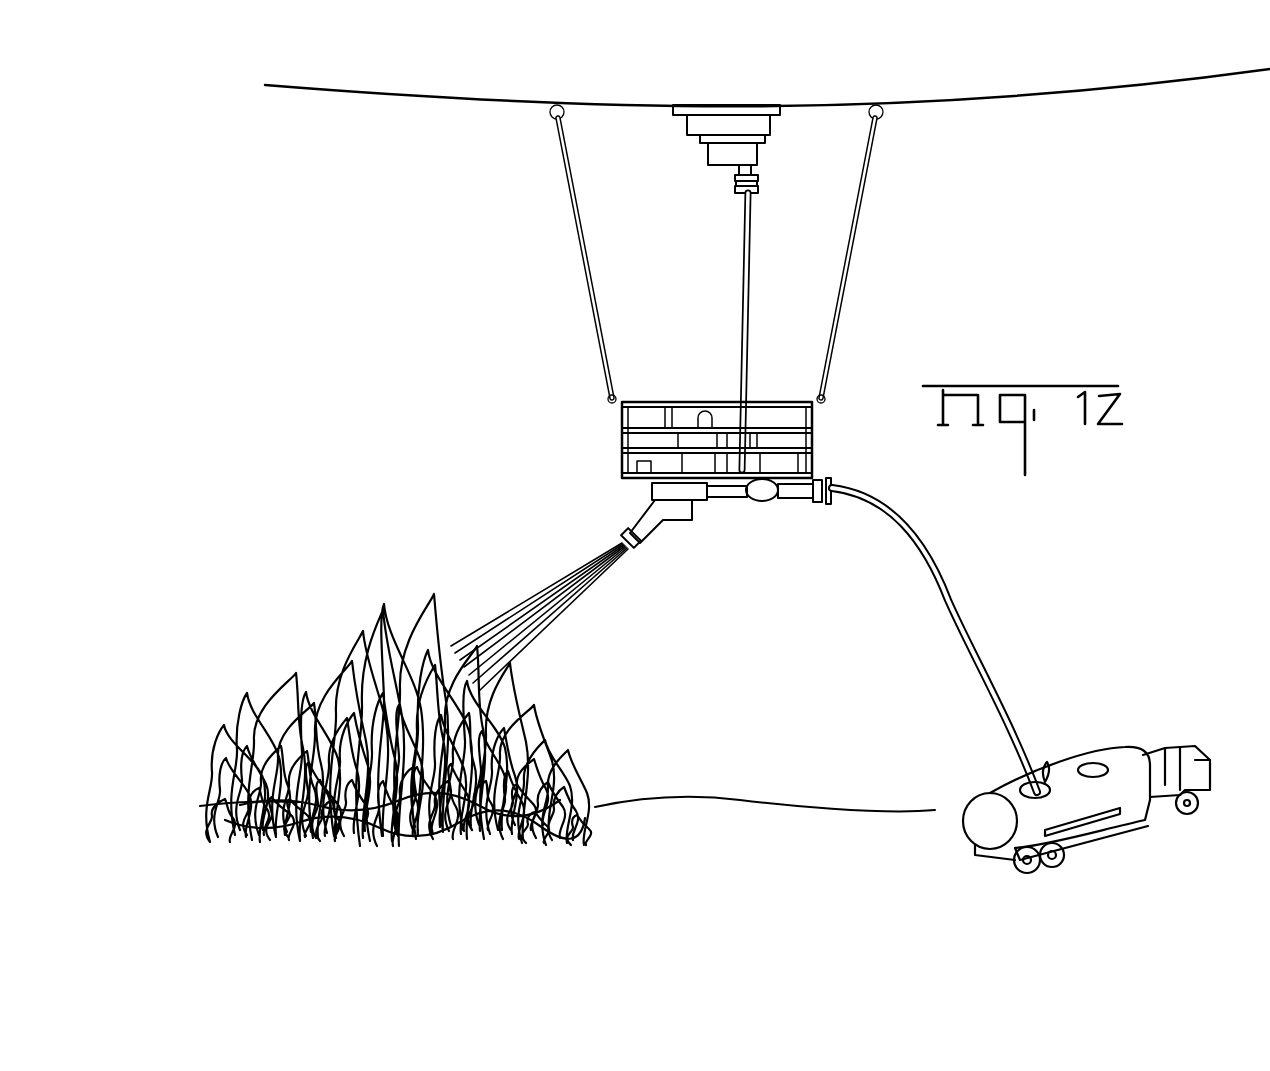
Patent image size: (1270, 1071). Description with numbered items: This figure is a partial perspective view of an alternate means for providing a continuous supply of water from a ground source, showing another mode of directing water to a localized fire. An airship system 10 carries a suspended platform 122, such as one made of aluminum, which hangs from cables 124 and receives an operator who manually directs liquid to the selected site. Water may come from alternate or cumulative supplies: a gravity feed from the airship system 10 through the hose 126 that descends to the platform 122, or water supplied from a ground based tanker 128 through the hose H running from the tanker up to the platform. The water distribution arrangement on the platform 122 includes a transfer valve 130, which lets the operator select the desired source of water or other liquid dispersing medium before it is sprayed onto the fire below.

The lighter-than-air vehicle / airship hull 10 is at (1045, 97).
The cables 124 is at (862, 212).
The hose 126 is at (752, 300).
The suspended platform 122 is at (825, 422).
The transfer valve 130 is at (762, 501).
The ground based tanker 128 is at (1090, 755).
The hose H is at (950, 590).